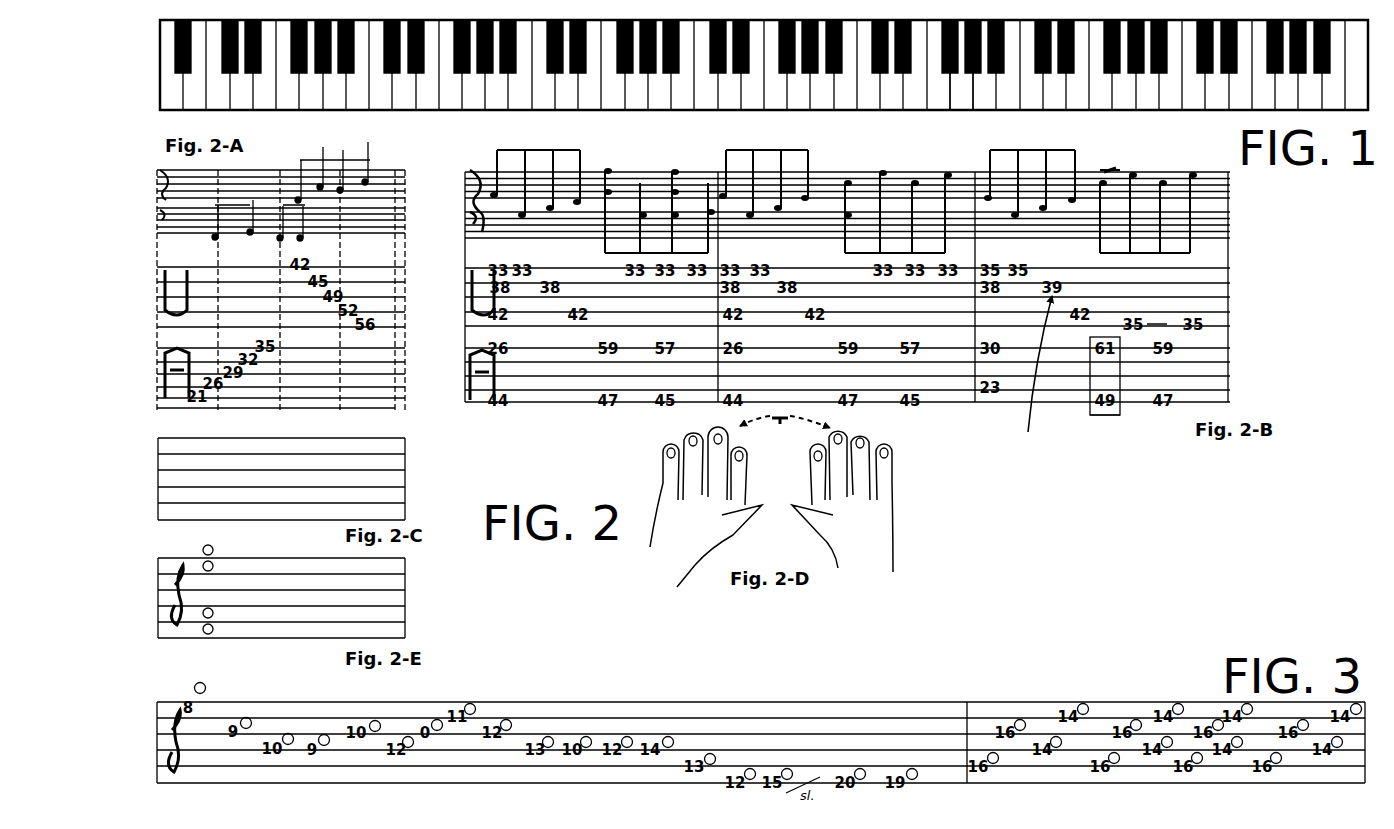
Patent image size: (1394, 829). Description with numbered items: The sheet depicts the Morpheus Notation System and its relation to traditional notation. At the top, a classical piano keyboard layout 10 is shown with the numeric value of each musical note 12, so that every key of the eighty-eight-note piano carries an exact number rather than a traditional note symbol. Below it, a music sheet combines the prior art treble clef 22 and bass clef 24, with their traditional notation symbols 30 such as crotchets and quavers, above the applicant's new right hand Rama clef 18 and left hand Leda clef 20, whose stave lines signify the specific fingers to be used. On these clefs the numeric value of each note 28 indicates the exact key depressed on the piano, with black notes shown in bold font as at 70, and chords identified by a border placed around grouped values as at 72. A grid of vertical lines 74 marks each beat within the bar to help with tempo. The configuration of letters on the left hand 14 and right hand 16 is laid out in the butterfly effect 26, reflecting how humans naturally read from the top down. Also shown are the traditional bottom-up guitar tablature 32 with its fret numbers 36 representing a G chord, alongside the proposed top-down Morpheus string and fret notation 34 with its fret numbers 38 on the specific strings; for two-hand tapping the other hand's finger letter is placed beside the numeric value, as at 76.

In FIG. 1, the piano keyboard layout 10 is at (630, 112).
In FIG. 1, the numeric value of musical note on keyboard 12 is at (960, 111).
In FIG. 2, the configuration of letters on left hand 14 is at (660, 456).
In FIG. 3, the configuration of letters on left hand 14 is at (212, 697).
In FIG. 2, the configuration of letters on right hand 16 is at (900, 470).
In FIG. 3, the configuration of letters on right hand 16 is at (1000, 770).
In FIG. 2, the right hand Rama clef 18 is at (1234, 295).
In FIG. 2, the left hand Leda clef 20 is at (1234, 373).
In FIG. 2, the treble clef prior art notation 22 is at (1234, 183).
In FIG. 2, the bass clef prior art notation 24 is at (1234, 222).
In FIG. 2, the butterfly effect 26 is at (781, 426).
In FIG. 2, the numeric value of note on keyboard 28 is at (1085, 410).
In FIG. 2, the prior art music notation symbols 30 is at (496, 186).
In FIG. 2, the bottom up prior art guitar tablature clef 32 is at (408, 488).
In FIG. 2, the top down butterfly Morpheus string/fret notation for guitars 34 is at (408, 607).
In FIG. 2, the numeric value of fret number on prior art tablature 36 is at (205, 522).
In FIG. 2, the numeric value of fret number on Morpheus tablature 38 is at (210, 636).
In FIG. 3, the numeric value of fret number on Morpheus tablature 38 is at (200, 715).
In FIG. 2, the bold numeric value indicating black note 70 is at (1036, 376).
In FIG. 2, the chord border 72 is at (1126, 414).
In FIG. 2, the grid of vertical lines 74 is at (328, 415).
In FIG. 3, the two hand tapping indication 76 is at (1150, 770).